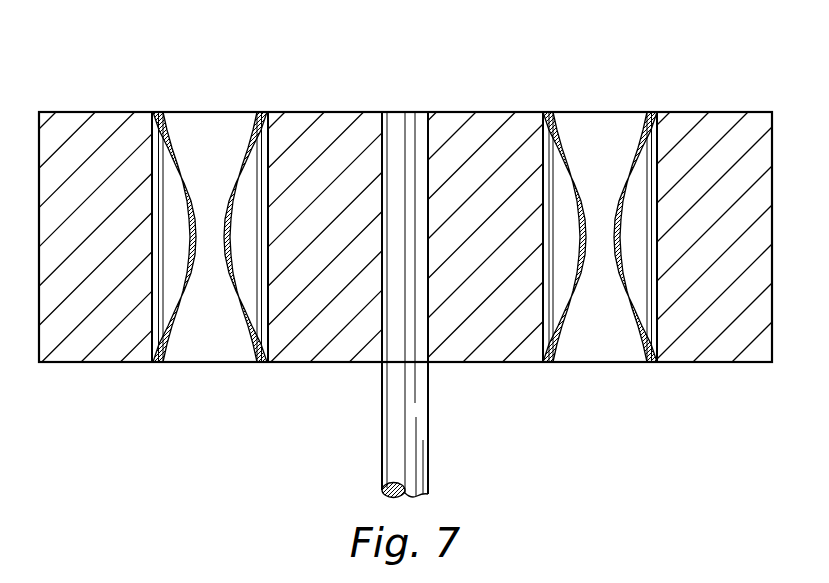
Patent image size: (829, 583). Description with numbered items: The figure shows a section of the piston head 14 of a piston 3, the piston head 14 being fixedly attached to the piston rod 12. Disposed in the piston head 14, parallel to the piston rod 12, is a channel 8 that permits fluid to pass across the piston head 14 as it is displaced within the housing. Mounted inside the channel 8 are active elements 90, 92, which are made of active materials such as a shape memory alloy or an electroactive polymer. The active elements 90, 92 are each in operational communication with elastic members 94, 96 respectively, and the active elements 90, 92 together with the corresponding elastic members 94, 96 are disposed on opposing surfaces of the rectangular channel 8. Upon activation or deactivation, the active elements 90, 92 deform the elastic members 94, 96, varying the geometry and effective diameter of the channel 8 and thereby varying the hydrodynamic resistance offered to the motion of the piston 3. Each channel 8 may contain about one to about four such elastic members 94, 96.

The piston 3 is at (404, 305).
The channel 8 is at (600, 330).
The piston rod 12 is at (427, 445).
The piston head 14 is at (342, 111).
The active element 90 is at (652, 223).
The active element 92 is at (553, 192).
The elastic member 94 is at (572, 175).
The elastic member 96 is at (637, 155).